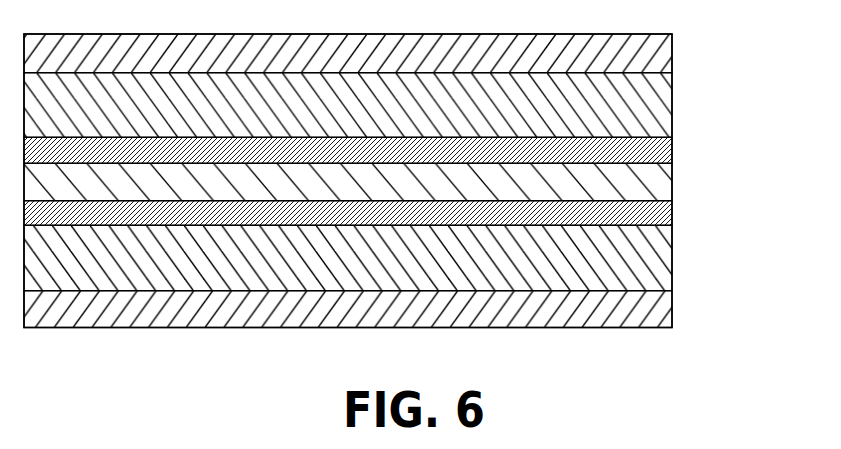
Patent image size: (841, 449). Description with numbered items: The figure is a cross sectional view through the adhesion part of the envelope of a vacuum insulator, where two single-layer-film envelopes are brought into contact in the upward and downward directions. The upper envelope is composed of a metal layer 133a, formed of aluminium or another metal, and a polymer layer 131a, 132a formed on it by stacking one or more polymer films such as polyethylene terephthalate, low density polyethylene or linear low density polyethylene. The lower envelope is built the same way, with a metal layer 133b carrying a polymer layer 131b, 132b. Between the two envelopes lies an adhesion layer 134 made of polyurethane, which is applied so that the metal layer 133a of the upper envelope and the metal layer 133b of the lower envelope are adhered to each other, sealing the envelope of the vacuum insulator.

The polymer layer 131a is at (672, 51).
The polymer layer 132a is at (672, 100).
The metal layer 133a is at (672, 145).
The adhesion layer 134 is at (672, 182).
The metal layer 133b is at (672, 213).
The polymer layer 132b is at (672, 254).
The polymer layer 131b is at (672, 302).